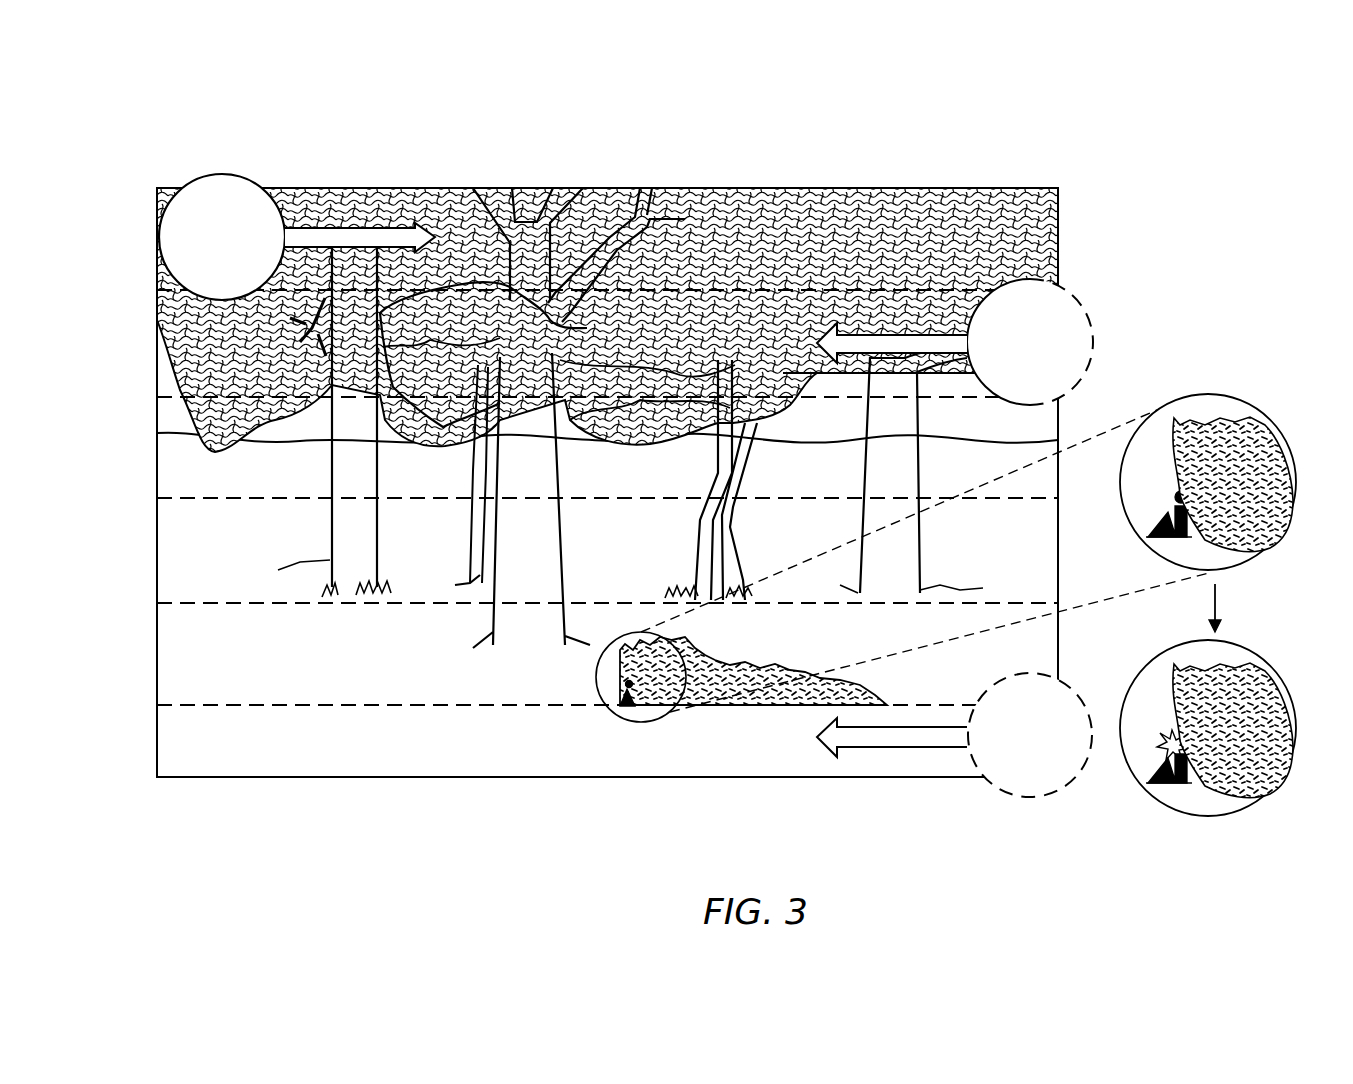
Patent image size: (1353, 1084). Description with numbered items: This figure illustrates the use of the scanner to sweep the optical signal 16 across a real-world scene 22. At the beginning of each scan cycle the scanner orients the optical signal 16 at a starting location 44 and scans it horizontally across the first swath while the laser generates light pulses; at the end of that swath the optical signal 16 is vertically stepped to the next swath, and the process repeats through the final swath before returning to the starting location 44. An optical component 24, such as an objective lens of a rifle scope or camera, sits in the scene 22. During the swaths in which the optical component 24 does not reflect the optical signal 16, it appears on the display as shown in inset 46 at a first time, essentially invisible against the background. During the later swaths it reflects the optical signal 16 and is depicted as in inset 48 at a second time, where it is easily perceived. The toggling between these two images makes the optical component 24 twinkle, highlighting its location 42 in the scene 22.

The optical signal 16 is at (243, 182).
The real-world scene 22 is at (975, 188).
The optical component 24 is at (630, 703).
The location of the optical component 42 is at (602, 674).
The starting location 44 is at (210, 146).
The inset 46 is at (1278, 408).
The inset 48 is at (1285, 658).